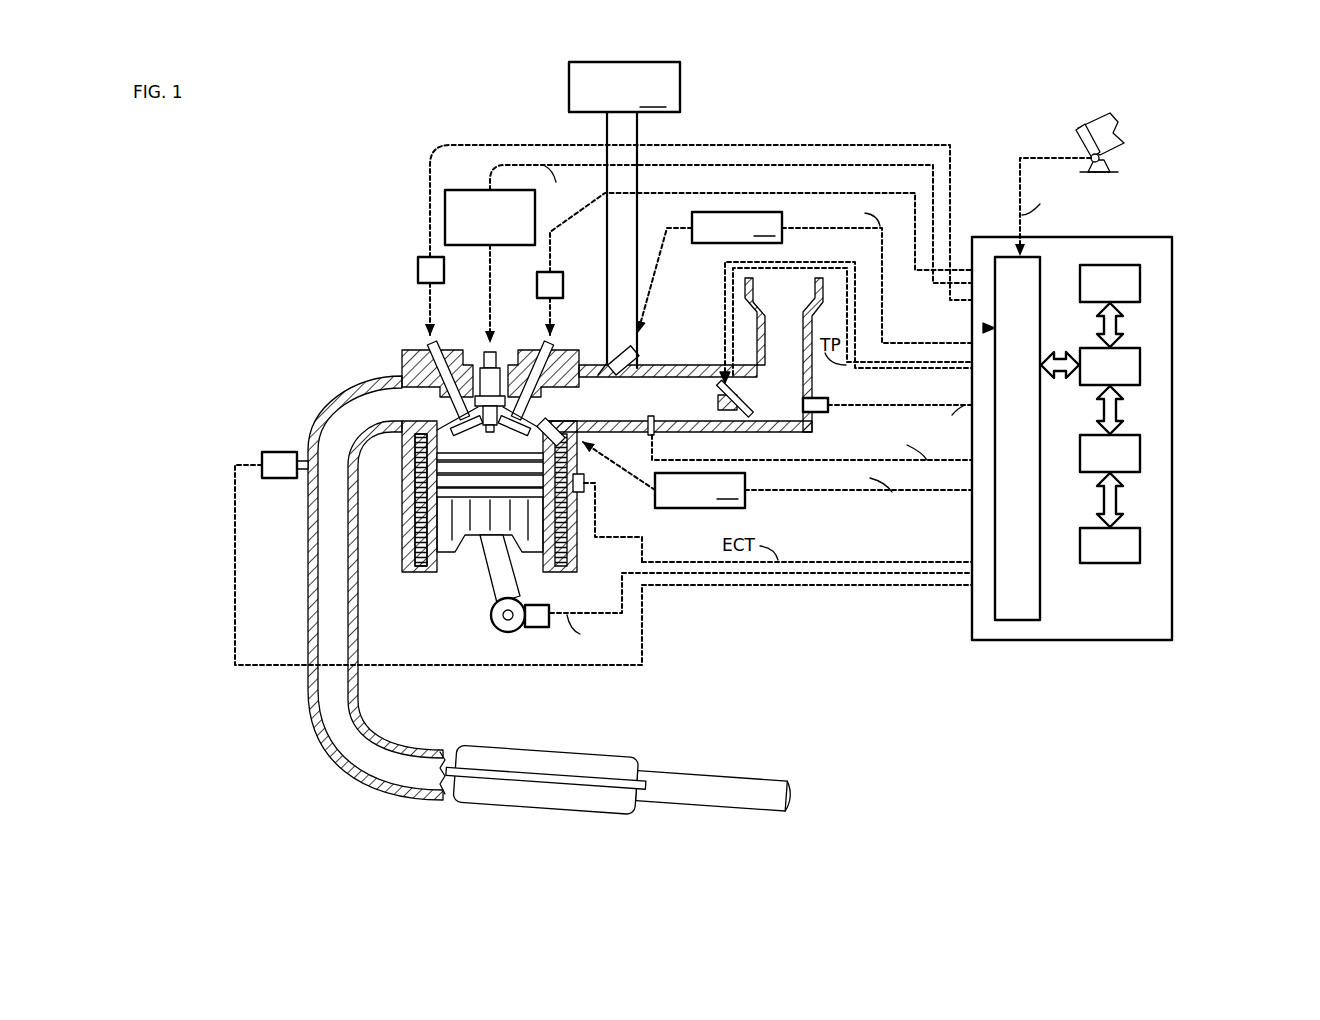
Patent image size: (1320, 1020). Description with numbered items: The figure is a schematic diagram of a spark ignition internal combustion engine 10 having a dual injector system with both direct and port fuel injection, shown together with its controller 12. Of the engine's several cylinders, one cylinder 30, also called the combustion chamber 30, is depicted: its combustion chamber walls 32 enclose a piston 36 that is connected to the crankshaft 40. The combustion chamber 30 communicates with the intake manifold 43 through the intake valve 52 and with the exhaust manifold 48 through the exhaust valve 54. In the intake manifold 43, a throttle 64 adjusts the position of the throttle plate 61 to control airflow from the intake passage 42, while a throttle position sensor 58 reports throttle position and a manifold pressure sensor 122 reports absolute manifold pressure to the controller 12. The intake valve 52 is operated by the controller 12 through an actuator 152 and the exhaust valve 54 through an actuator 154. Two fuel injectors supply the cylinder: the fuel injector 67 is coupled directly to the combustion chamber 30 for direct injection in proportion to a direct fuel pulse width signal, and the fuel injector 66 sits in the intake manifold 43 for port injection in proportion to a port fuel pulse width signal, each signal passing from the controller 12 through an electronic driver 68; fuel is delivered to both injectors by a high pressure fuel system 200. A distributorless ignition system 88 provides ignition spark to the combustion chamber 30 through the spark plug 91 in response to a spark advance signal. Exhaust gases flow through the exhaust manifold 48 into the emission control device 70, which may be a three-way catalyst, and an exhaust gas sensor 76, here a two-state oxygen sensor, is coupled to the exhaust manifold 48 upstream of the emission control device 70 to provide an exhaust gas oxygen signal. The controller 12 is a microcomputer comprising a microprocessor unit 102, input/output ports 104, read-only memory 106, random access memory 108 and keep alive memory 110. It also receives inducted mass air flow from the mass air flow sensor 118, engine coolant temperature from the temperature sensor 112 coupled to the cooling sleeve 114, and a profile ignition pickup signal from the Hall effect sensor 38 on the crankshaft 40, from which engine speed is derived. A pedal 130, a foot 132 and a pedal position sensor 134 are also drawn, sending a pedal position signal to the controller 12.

The engine 10 is at (345, 312).
The controller 12 is at (1108, 425).
The cylinder 30 is at (489, 518).
The combustion chamber walls 32 is at (428, 565).
The piston 36 is at (474, 522).
The Hall effect sensor 38 is at (535, 628).
The crankshaft 40 is at (500, 632).
The intake passage 42 is at (790, 330).
The intake manifold 43 is at (640, 401).
The exhaust manifold 48 is at (384, 416).
The intake valve 52 is at (512, 368).
The exhaust valve 54 is at (433, 397).
The throttle position sensor 58 is at (740, 421).
The throttle plate 61 is at (737, 412).
The throttle 64 is at (718, 408).
The fuel injector 66 is at (625, 352).
The fuel injector 67 is at (577, 446).
The electronic driver 68 is at (789, 357).
The emission control device 70 is at (597, 747).
The exhaust gas sensor 76 is at (262, 458).
The distributorless ignition system 88 is at (458, 190).
The spark plug 91 is at (498, 346).
The microprocessor unit 102 is at (1142, 362).
The input/output ports 104 is at (1040, 263).
The read-only memory 106 is at (1142, 283).
The random access memory 108 is at (1143, 450).
The keep alive memory 110 is at (1143, 542).
The temperature sensor 112 is at (590, 490).
The cooling sleeve 114 is at (575, 538).
The mass air flow sensor 118 is at (822, 402).
The manifold pressure sensor 122 is at (651, 435).
The accelerator pedal 130 is at (1120, 126).
The foot 132 is at (1075, 133).
The pedal position sensor 134 is at (1107, 160).
The actuator 152 is at (537, 285).
The actuator 154 is at (418, 268).
The fuel system 200 is at (624, 215).